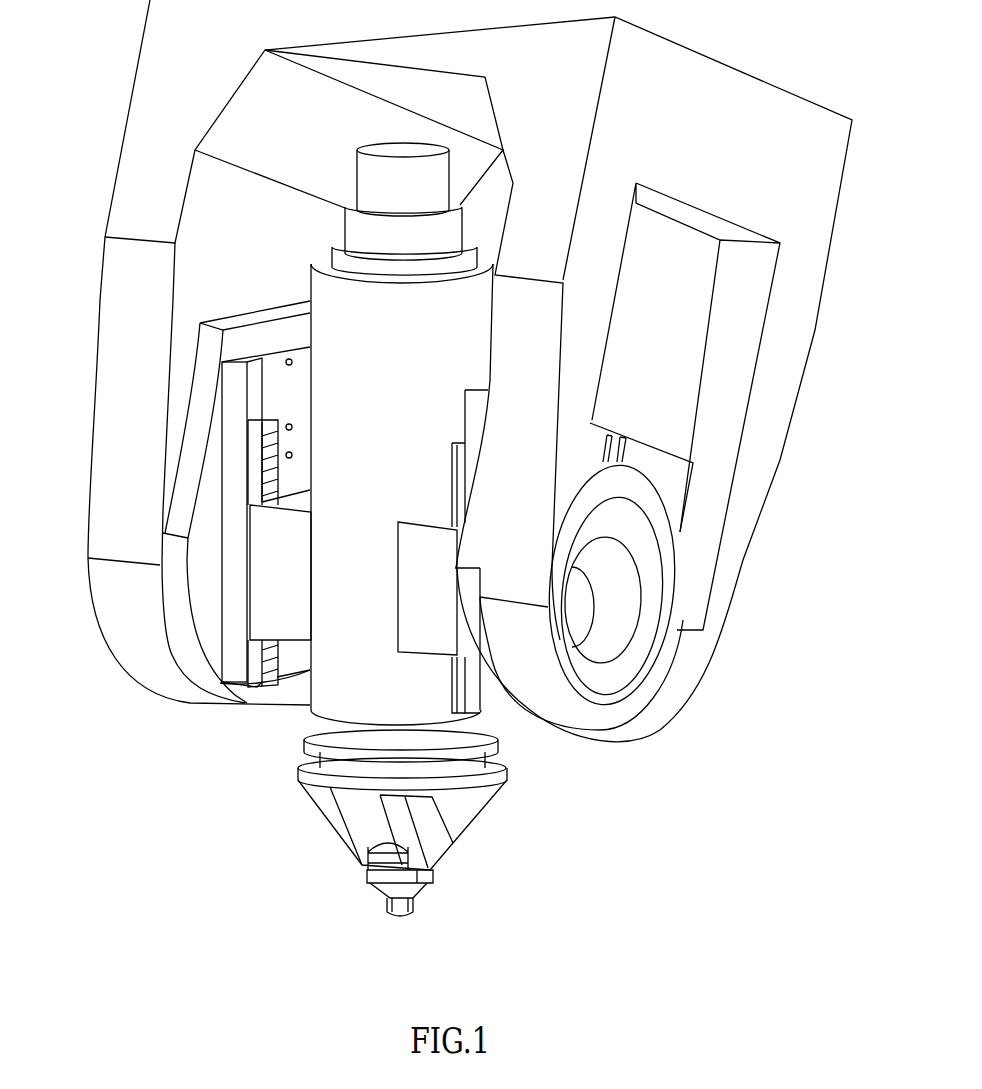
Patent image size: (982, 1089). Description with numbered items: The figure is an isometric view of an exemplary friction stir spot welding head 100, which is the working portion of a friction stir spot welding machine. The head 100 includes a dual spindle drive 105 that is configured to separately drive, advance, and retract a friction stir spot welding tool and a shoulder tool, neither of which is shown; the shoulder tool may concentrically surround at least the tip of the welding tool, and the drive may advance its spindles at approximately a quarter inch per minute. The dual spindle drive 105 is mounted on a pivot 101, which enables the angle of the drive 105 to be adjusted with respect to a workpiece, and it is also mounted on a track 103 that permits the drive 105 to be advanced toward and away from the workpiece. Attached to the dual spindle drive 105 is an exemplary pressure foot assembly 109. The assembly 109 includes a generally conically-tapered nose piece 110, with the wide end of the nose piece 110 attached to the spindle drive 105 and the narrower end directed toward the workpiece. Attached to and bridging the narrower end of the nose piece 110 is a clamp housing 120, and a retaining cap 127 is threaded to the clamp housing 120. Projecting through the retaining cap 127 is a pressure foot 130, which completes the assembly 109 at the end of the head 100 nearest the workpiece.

The friction stir spot welding head 100 is at (752, 657).
The pivot 101 is at (627, 688).
The track 103 is at (247, 607).
The dual spindle drive 105 is at (310, 704).
The pressure foot assembly 109 is at (573, 763).
The nose piece 110 is at (473, 815).
The clamp housing 120 is at (427, 886).
The retaining cap 127 is at (387, 902).
The pressure foot 130 is at (400, 913).